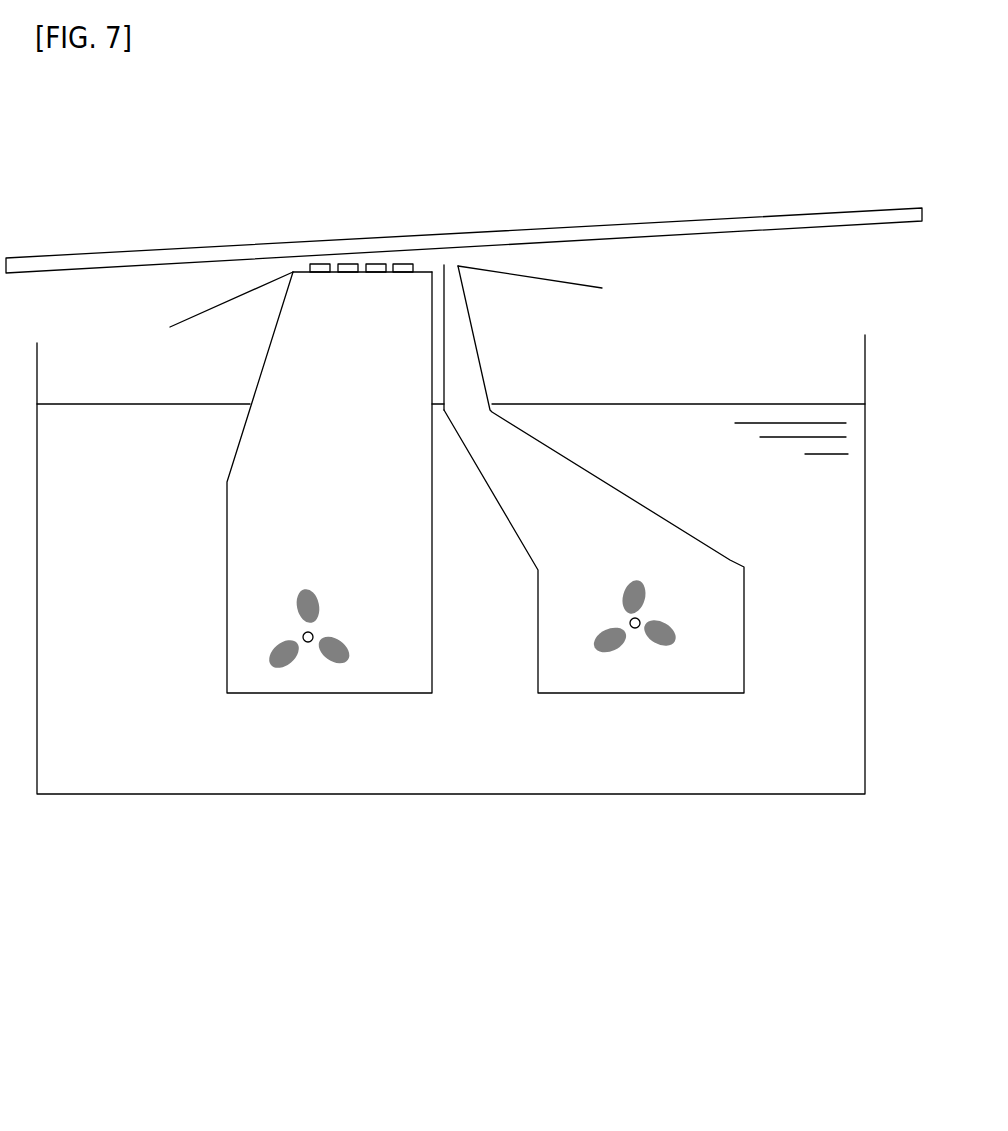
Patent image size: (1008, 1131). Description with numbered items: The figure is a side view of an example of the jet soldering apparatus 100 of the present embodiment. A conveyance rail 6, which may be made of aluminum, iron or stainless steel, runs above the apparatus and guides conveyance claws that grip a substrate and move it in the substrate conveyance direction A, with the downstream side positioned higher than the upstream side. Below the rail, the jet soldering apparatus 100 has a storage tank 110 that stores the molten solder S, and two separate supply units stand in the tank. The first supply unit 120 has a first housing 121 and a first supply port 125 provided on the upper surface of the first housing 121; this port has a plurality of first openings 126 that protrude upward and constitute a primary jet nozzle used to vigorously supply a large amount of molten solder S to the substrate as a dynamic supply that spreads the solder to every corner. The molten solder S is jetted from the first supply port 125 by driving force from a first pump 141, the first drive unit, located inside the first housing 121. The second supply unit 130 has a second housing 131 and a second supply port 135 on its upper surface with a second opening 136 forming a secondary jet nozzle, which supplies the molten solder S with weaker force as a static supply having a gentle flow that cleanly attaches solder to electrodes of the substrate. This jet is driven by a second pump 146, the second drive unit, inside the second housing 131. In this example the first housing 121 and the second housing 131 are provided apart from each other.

The conveyance rail 6 is at (240, 245).
The substrate conveyance direction A is at (173, 211).
The molten solder S is at (640, 400).
The jet soldering apparatus 100 is at (451, 553).
The storage tank 110 is at (37, 373).
The first supply unit 120 is at (242, 436).
The first housing 121 is at (227, 556).
The first supply port 125 is at (347, 255).
The first openings 126 is at (350, 275).
The second supply unit 130 is at (620, 430).
The second housing 131 is at (645, 508).
The second supply port 135 is at (468, 252).
The second opening 136 is at (453, 270).
The first pump 141 is at (268, 629).
The second pump 146 is at (710, 627).